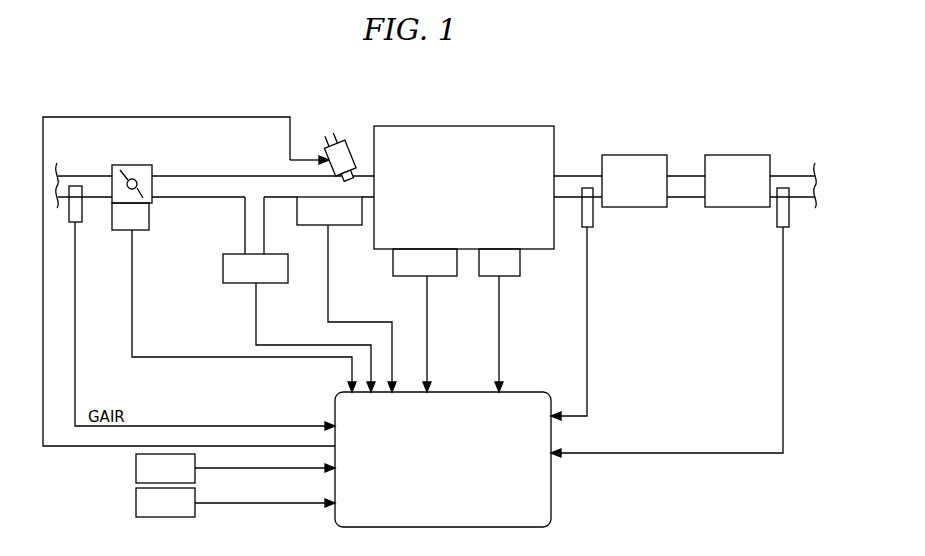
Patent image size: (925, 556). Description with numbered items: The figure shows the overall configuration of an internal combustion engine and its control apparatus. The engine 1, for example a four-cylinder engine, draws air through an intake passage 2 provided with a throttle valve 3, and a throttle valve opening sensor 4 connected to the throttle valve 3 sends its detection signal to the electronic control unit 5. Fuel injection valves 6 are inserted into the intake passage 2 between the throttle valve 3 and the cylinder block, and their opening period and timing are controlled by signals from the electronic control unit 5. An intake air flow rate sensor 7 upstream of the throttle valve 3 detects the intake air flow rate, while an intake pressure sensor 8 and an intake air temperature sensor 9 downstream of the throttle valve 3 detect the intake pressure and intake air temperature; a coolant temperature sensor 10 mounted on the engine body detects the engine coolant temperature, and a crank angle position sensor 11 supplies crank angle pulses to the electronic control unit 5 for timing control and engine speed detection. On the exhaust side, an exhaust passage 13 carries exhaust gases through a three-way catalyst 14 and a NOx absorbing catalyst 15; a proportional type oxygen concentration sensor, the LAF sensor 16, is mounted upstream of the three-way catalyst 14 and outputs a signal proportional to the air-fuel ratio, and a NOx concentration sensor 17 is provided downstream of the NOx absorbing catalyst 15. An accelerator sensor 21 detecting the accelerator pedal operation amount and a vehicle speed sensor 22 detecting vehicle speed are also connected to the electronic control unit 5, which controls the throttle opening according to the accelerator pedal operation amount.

The engine 1 is at (458, 126).
The intake passage 2 is at (207, 176).
The throttle valve 3 is at (120, 172).
The throttle valve opening sensor 4 is at (146, 231).
The electronic control unit 5 is at (472, 392).
The fuel injection valve 6 is at (350, 146).
The intake air flow rate sensor 7 is at (73, 225).
The intake pressure sensor 8 is at (275, 284).
The intake air temperature sensor 9 is at (340, 226).
The coolant temperature sensor 10 is at (448, 277).
The crank angle position sensor 11 is at (511, 277).
The exhaust passage 13 is at (584, 175).
The three-way catalyst 14 is at (639, 155).
The NOx absorbing catalyst 15 is at (737, 155).
The LAF sensor 16 is at (585, 228).
The NOx concentration sensor 17 is at (780, 228).
The accelerator sensor 21 is at (136, 458).
The vehicle speed sensor 22 is at (136, 497).